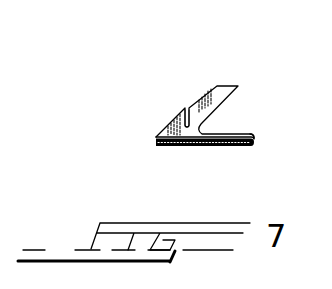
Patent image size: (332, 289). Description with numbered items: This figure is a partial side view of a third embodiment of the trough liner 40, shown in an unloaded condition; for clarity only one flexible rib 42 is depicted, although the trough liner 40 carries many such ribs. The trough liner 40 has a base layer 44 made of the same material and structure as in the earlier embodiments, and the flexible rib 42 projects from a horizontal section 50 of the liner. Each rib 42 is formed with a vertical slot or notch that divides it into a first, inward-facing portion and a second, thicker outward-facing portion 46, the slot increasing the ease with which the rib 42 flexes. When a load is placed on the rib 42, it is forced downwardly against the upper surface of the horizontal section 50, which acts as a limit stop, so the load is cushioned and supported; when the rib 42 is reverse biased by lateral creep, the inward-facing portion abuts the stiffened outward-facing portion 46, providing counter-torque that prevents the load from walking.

The trough liner 40 is at (166, 88).
The flexible rib 42 is at (216, 80).
The base layer 44 is at (203, 93).
The outward-facing portion 46 is at (162, 123).
The horizontal section 50 is at (241, 133).